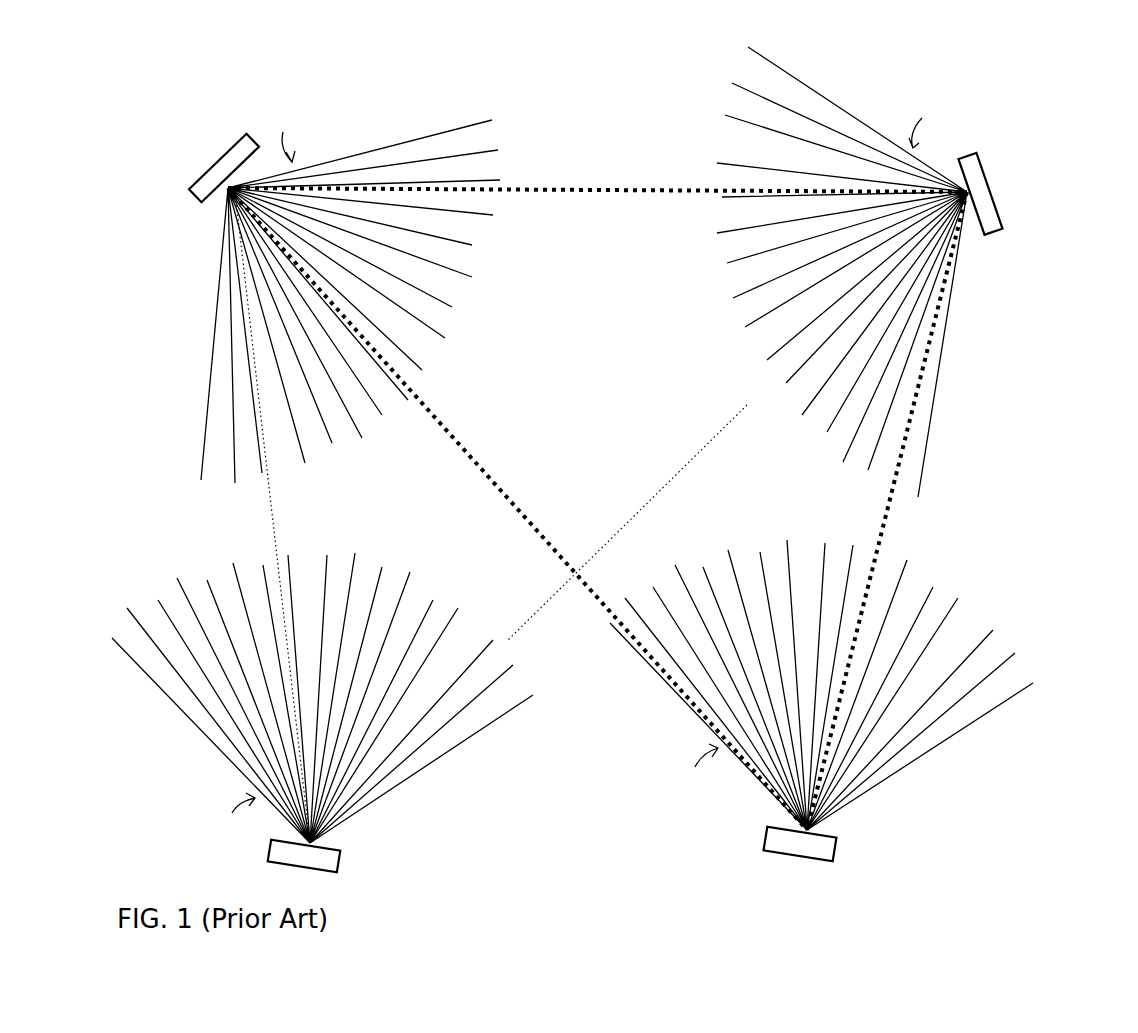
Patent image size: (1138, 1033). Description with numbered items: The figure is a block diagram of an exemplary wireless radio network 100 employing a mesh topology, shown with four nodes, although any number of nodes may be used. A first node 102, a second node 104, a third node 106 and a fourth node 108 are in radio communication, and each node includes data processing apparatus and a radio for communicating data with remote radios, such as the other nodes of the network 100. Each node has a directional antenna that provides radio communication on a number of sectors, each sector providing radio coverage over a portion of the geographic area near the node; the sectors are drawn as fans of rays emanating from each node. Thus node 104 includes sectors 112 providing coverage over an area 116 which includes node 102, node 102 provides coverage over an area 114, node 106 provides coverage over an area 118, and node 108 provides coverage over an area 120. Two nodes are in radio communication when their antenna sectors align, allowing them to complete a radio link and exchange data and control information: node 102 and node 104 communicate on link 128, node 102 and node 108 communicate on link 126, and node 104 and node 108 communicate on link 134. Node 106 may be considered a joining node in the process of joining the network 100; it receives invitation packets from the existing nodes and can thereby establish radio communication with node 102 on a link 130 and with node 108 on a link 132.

The wireless radio network 100 is at (611, 813).
The first node 102 is at (1003, 215).
The second node 104 is at (838, 858).
The third node 106 is at (337, 870).
The fourth node 108 is at (228, 152).
The sectors 112 is at (1005, 707).
The area 114 is at (964, 326).
The area 116 is at (909, 777).
The area 118 is at (418, 789).
The area 120 is at (207, 280).
The link 126 is at (665, 183).
The link 128 is at (883, 512).
The link 130 is at (727, 422).
The link 132 is at (275, 522).
The link 134 is at (507, 488).